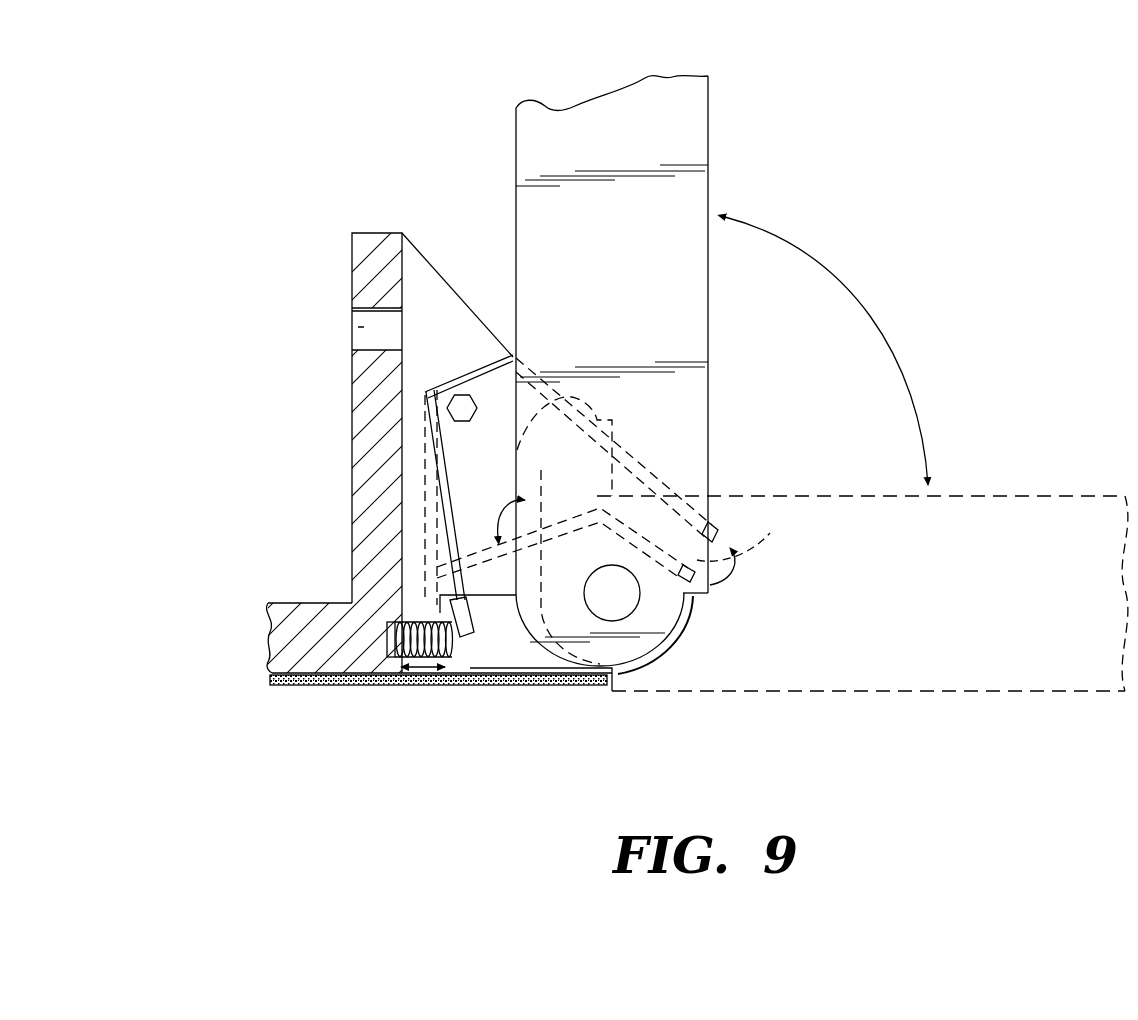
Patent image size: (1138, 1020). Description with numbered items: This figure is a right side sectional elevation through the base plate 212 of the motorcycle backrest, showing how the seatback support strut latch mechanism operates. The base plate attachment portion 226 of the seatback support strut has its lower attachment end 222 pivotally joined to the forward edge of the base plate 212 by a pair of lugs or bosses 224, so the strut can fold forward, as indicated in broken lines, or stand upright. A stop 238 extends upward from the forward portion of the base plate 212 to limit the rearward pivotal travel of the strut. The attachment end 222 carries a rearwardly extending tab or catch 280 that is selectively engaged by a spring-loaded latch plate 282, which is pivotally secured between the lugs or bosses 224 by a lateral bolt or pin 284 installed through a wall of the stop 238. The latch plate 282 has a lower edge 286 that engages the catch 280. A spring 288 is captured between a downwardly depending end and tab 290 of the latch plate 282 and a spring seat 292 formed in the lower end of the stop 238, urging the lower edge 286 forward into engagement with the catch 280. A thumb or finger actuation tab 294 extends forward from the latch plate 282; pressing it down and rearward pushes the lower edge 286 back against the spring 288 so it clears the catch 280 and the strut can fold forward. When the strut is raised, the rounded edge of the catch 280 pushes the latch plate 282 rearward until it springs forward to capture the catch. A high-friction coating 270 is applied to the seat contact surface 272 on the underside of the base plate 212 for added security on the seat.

The base plate 212 is at (240, 605).
The attachment end 222 is at (690, 691).
The lugs or bosses 224 is at (690, 622).
The base plate attachment portion 226 is at (838, 496).
The stop 238 is at (352, 380).
The coating 270 is at (338, 686).
The seat contact surface 272 is at (285, 686).
The tab or catch 280 is at (492, 600).
The latch plate 282 is at (408, 487).
The lateral bolt or pin 284 is at (462, 392).
The lower edge 286 is at (498, 633).
The spring 288 is at (414, 688).
The downwardly depending end and tab 290 is at (470, 688).
The spring seat 292 is at (387, 632).
The actuation tab 294 is at (712, 530).